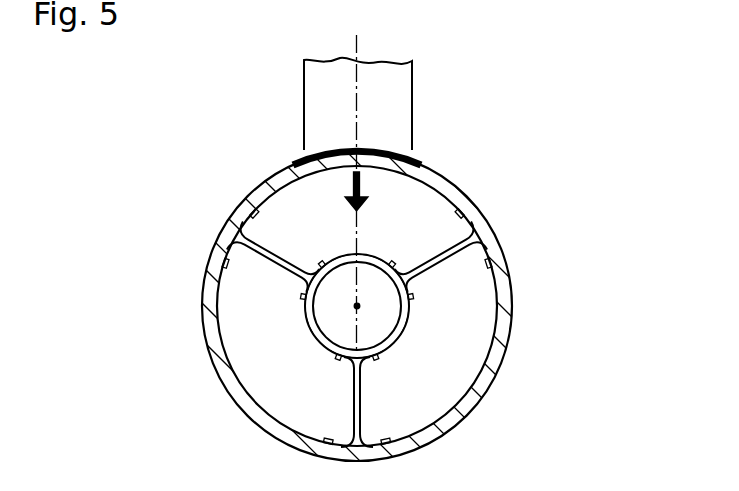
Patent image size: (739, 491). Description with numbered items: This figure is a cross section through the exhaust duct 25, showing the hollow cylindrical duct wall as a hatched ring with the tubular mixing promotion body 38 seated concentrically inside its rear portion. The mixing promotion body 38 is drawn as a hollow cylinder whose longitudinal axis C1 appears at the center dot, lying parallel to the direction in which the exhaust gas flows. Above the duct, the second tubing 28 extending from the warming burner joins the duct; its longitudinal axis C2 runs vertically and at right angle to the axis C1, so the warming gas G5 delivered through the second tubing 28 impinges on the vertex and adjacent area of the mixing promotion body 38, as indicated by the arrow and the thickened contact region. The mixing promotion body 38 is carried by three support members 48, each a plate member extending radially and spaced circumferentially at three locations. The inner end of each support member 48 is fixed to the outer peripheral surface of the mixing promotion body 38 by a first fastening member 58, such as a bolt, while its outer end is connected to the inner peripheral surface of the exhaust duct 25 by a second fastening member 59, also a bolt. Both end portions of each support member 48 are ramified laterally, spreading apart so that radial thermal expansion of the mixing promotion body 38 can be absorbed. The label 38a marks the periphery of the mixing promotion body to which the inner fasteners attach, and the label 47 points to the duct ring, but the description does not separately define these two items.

The exhaust duct 25 is at (458, 202).
The second tubing 28 is at (412, 80).
The mixing promotion body 38 is at (313, 329).
The outer peripheral surface of hub 38a is at (335, 258).
The outer ring 47 is at (512, 353).
The support member 48 is at (449, 256).
The first fastening member 58 is at (302, 298).
The second fastening member 59 is at (265, 218).
The longitudinal axis of the mixing promotion body C1 is at (355, 307).
The longitudinal axis of the second tubing C2 is at (355, 92).
The warming gas G5 is at (393, 158).